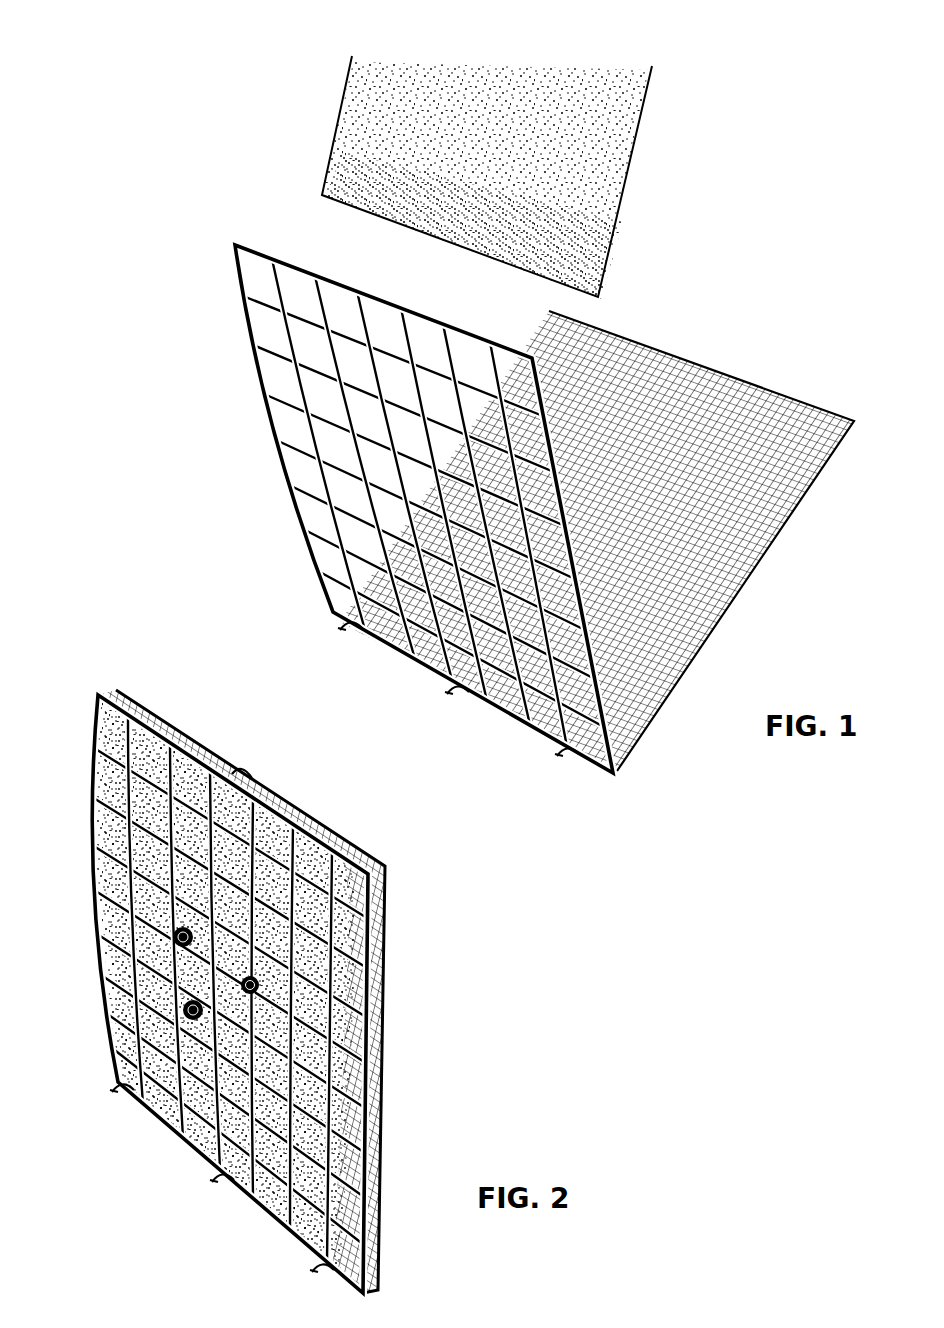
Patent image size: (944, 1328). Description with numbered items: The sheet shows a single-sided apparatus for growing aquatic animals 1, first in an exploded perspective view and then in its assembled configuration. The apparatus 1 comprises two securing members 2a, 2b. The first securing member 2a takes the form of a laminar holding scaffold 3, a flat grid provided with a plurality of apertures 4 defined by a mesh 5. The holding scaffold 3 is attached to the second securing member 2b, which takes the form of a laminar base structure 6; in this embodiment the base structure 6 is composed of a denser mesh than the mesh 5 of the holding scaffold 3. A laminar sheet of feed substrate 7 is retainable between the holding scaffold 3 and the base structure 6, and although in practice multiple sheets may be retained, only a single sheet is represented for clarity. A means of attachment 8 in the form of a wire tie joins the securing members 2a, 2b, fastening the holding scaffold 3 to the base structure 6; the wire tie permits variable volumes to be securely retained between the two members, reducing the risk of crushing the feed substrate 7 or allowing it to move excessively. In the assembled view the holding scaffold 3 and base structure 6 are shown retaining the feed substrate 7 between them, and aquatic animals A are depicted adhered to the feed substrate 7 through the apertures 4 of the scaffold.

In FIG. 1, the apparatus for growing aquatic animals 1 is at (495, 420).
In FIG. 2, the apparatus for growing aquatic animals 1 is at (254, 990).
In FIG. 1, the first securing member 2a is at (413, 509).
In FIG. 1, the second securing member 2b is at (600, 545).
In FIG. 1, the laminar holding scaffold 3 is at (298, 456).
In FIG. 2, the laminar holding scaffold 3 is at (98, 853).
In FIG. 1, the apertures 4 is at (335, 558).
In FIG. 1, the mesh 5 is at (322, 592).
In FIG. 1, the laminar base structure 6 is at (655, 650).
In FIG. 2, the laminar base structure 6 is at (385, 888).
In FIG. 1, the feed substrate 7 is at (592, 232).
In FIG. 2, the feed substrate 7 is at (120, 786).
In FIG. 1, the means of attachment 8 is at (560, 752).
In FIG. 2, the means of attachment 8 is at (243, 776).
In FIG. 2, the aquatic animals A is at (190, 1005).